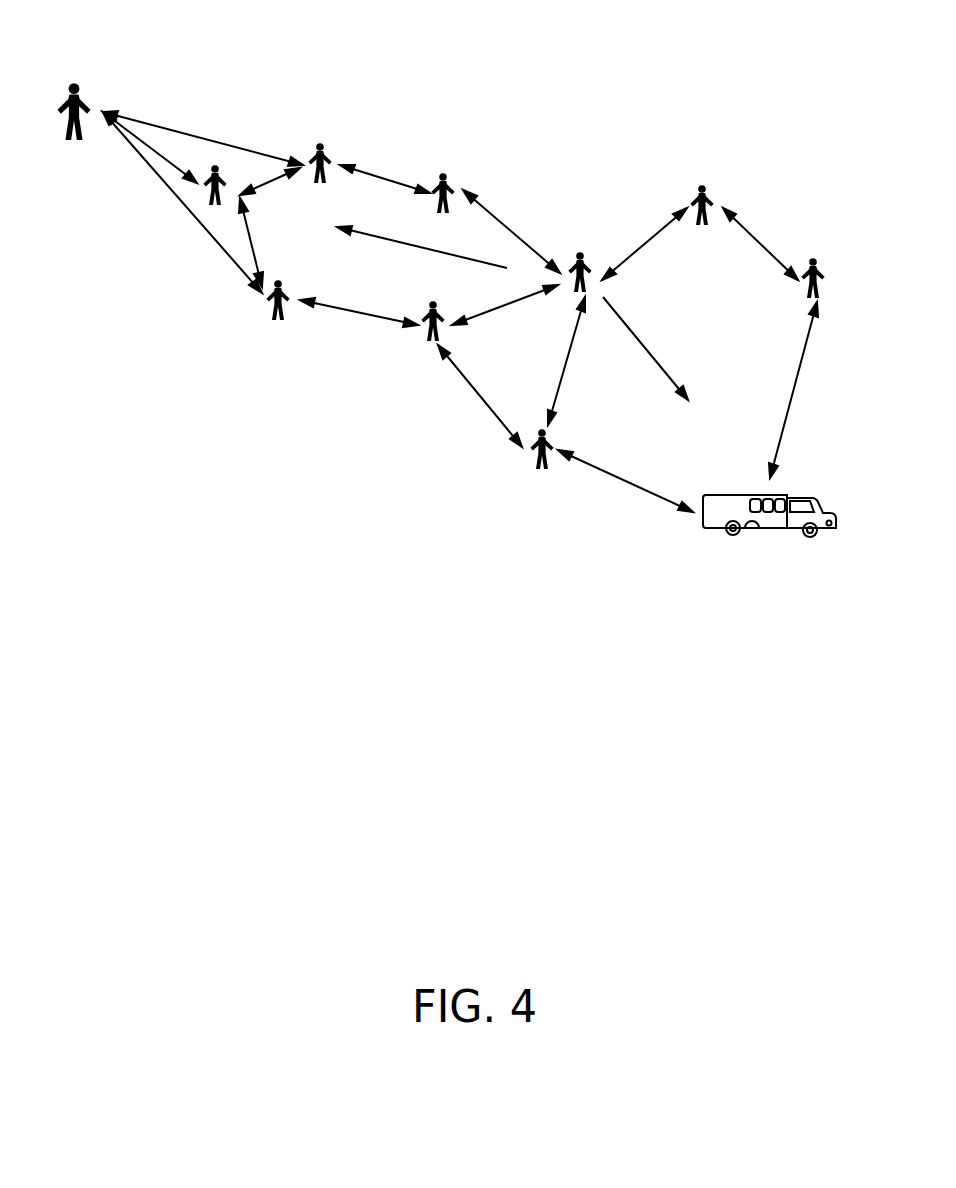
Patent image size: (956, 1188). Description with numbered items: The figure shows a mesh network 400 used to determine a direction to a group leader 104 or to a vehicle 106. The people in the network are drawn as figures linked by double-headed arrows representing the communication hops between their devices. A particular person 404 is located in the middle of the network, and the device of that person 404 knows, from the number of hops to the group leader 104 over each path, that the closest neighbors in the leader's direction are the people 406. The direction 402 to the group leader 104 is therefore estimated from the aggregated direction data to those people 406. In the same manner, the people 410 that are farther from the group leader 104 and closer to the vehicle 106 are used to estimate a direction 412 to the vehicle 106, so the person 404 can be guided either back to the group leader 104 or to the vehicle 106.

The mesh network 400 is at (446, 511).
The group leader 104 is at (78, 83).
The vehicle 106 is at (777, 532).
The direction to the group leader 402 is at (393, 238).
The person 404 is at (582, 245).
The people closer to the group leader 406 is at (440, 218).
The people farther from the group leader 410 is at (710, 230).
The direction to the vehicle 412 is at (654, 356).